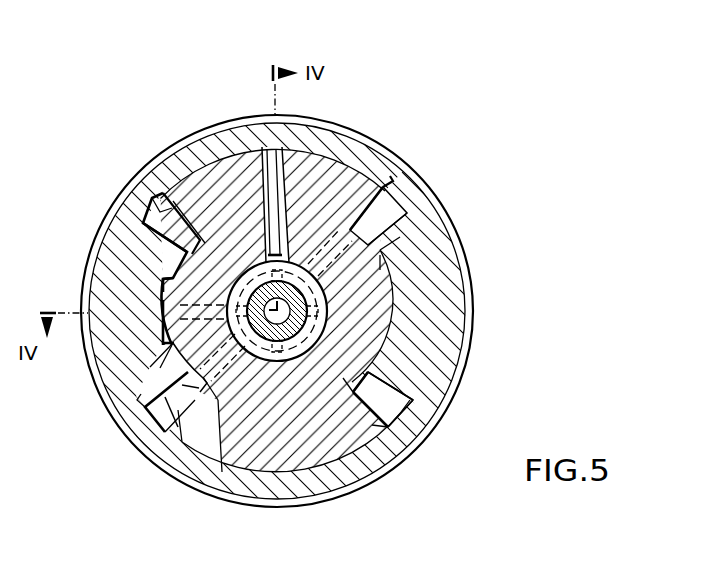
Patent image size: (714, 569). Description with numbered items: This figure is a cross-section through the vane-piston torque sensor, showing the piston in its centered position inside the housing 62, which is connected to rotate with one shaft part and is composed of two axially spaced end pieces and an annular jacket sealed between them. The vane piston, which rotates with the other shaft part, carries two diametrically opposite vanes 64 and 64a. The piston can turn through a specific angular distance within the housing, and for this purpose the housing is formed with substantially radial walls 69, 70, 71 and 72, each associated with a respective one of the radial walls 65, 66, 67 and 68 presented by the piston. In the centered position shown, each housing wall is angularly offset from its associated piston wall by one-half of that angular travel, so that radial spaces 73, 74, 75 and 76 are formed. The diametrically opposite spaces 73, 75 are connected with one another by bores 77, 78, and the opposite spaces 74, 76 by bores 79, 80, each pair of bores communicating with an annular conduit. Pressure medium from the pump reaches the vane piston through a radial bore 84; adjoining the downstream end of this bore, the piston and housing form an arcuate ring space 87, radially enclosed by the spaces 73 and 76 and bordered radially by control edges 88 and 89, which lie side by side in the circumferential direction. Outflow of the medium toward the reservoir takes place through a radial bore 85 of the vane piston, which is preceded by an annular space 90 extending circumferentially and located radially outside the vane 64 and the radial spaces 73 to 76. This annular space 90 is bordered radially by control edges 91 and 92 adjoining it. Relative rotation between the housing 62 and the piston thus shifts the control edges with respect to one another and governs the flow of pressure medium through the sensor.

The housing 62 is at (155, 196).
The vane 64 is at (312, 160).
The vane 64a is at (372, 425).
The radial wall 65 is at (203, 213).
The radial wall 66 is at (376, 205).
The radial wall 67 is at (182, 385).
The radial wall 68 is at (388, 410).
The radial wall 69 is at (147, 232).
The radial wall 70 is at (400, 237).
The radial wall 71 is at (380, 395).
The radial wall 72 is at (158, 408).
The radial space 73 is at (160, 217).
The radial space 74 is at (392, 212).
The radial space 75 is at (393, 405).
The radial space 76 is at (170, 410).
The bore 77 is at (156, 205).
The bore 78 is at (343, 378).
The bore 79 is at (383, 262).
The bore 80 is at (203, 377).
The radial bore 84 is at (163, 311).
The radial bore 85 is at (281, 163).
The arcuate ring space 87 is at (162, 330).
The control edge 88 is at (163, 287).
The control edge 89 is at (160, 368).
The annular space 90 is at (368, 172).
The control edge 91 is at (163, 188).
The control edge 92 is at (387, 188).